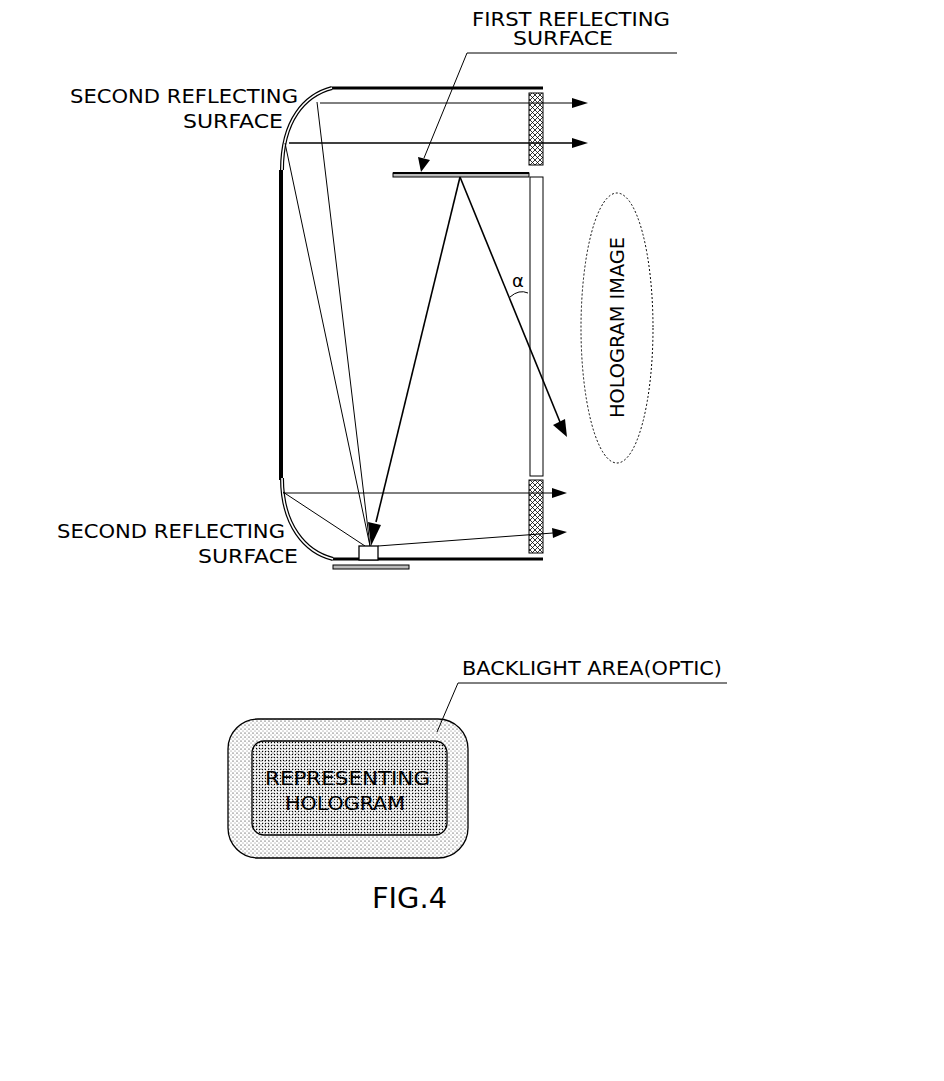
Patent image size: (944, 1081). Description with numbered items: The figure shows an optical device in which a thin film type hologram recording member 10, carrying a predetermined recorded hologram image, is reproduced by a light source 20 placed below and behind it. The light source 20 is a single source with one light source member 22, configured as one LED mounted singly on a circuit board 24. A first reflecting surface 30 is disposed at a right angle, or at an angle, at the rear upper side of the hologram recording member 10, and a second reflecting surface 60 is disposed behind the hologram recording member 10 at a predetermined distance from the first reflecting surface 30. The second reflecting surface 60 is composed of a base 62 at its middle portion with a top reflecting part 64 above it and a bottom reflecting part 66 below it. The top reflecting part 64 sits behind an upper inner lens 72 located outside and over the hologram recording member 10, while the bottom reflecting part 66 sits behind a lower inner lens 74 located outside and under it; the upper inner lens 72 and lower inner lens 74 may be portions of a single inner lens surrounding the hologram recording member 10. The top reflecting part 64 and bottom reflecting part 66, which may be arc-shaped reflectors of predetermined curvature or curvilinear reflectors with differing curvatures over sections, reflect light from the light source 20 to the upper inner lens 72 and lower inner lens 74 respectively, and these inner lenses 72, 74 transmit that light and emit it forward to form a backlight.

The hologram recording member 10 is at (541, 203).
The light source 20 is at (364, 608).
The light source member 22 is at (380, 550).
The circuit board 24 is at (405, 569).
The first reflecting surface 30 is at (408, 177).
The second reflecting surface 60 is at (219, 323).
The base 62 is at (279, 338).
The top reflecting part 64 is at (280, 158).
The bottom reflecting part 66 is at (244, 518).
The upper inner lens 72 is at (545, 128).
The lower inner lens 74 is at (545, 525).